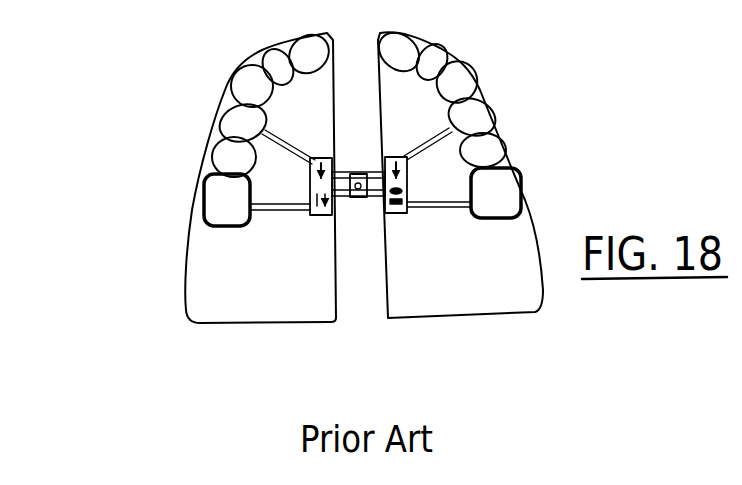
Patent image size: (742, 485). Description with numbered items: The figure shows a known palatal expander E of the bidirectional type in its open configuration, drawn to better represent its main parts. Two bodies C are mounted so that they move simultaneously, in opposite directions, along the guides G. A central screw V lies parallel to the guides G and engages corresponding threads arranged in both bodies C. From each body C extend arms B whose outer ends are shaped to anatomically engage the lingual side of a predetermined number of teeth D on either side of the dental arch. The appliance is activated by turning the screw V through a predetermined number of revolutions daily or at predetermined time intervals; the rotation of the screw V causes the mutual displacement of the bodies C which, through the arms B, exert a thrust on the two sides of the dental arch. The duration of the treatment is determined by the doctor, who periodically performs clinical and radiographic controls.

The arms B is at (289, 146).
The bodies C is at (316, 223).
The teeth D is at (230, 117).
The palatal expander E is at (357, 273).
The guides G is at (352, 173).
The central screw V is at (366, 172).